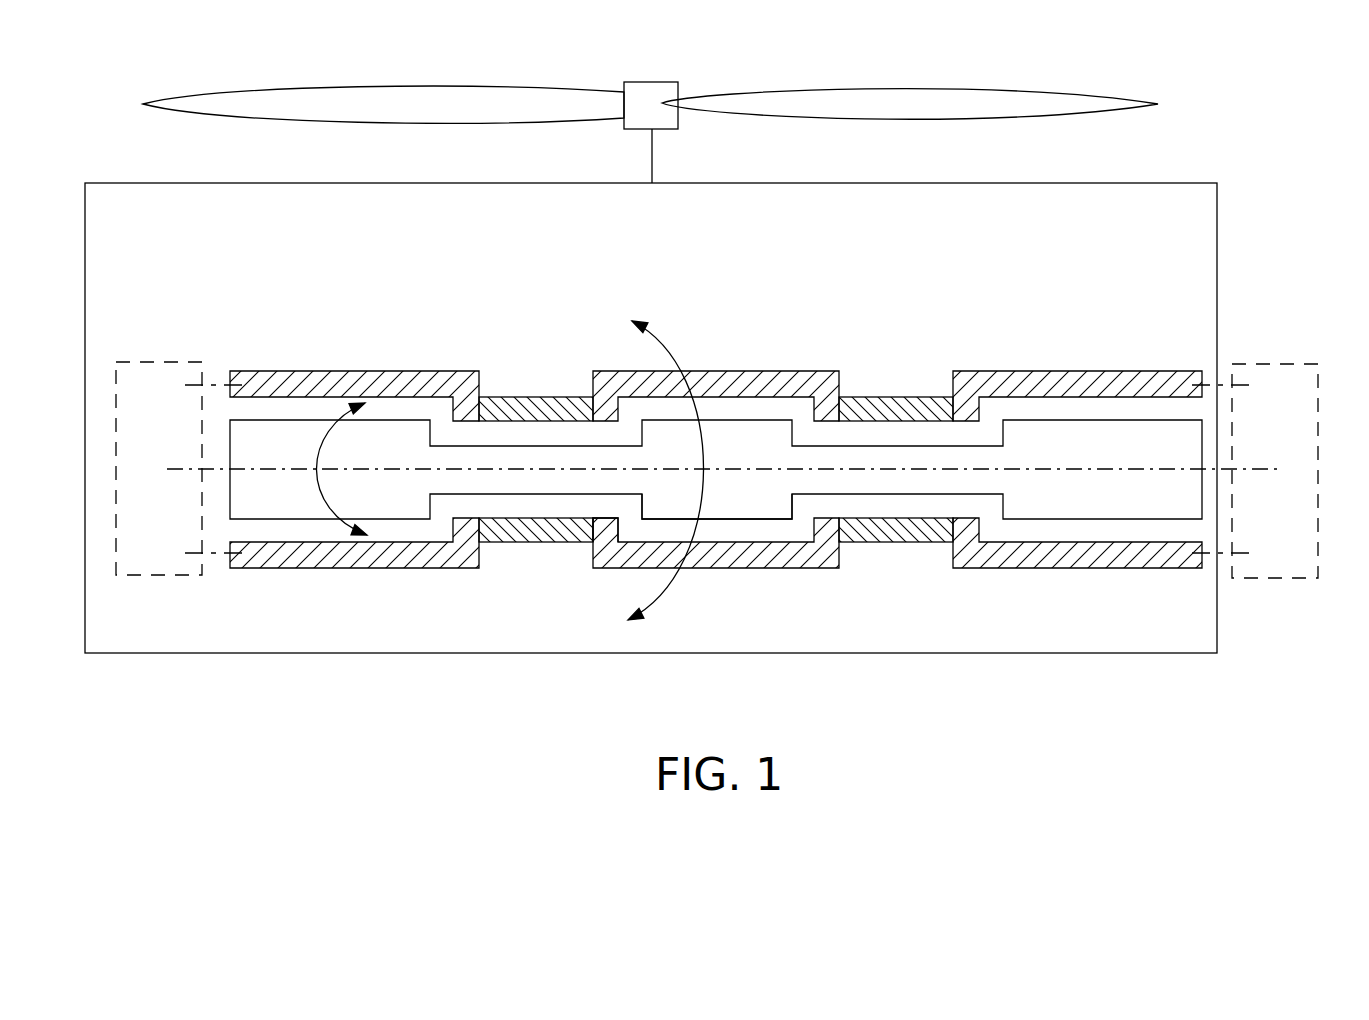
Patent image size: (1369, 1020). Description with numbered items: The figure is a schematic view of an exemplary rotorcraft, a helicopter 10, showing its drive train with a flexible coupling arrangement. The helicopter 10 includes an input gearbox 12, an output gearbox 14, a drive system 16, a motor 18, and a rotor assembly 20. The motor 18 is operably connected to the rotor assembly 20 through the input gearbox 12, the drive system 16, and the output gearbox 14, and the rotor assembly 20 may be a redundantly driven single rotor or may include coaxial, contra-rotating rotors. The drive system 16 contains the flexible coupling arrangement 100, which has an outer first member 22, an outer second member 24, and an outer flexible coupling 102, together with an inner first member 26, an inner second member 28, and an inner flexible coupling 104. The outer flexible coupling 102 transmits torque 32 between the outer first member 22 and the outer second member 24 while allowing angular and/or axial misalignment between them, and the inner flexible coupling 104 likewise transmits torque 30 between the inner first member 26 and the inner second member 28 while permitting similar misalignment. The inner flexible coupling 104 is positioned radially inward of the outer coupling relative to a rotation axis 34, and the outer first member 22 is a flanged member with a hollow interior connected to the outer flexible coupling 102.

The helicopter 10 is at (1053, 653).
The input gearbox 12 is at (386, 360).
The output gearbox 14 is at (1061, 359).
The drive system 16 is at (716, 408).
The motor 18 is at (172, 536).
The rotor assembly 20 is at (1287, 538).
The outer first member 22 is at (520, 400).
The outer second member 24 is at (885, 400).
The inner first member 26 is at (528, 480).
The inner second member 28 is at (895, 478).
The torque 30 is at (322, 490).
The torque 32 is at (675, 352).
The rotation axis 34 is at (762, 472).
The flexible coupling arrangement 100 is at (766, 358).
The outer flexible coupling 102 is at (618, 553).
The inner flexible coupling 104 is at (718, 503).